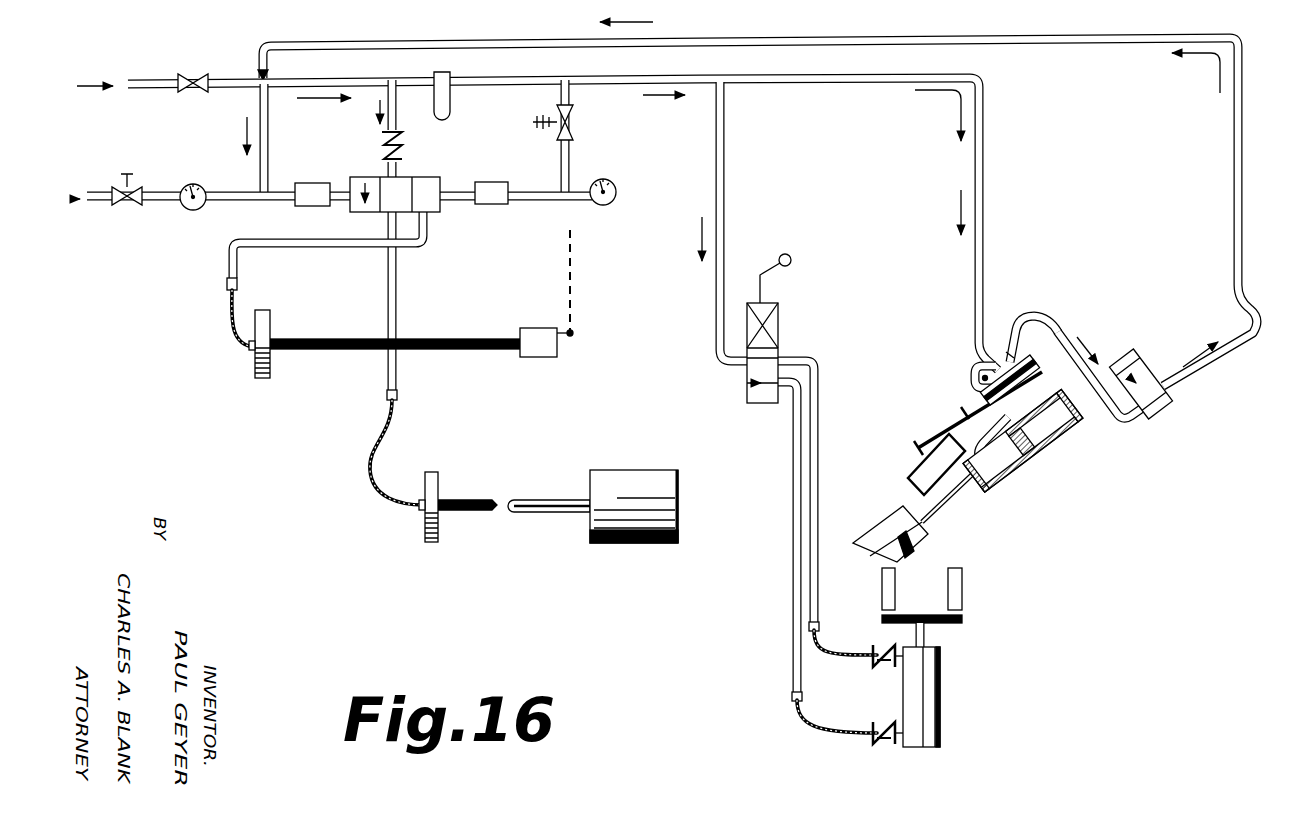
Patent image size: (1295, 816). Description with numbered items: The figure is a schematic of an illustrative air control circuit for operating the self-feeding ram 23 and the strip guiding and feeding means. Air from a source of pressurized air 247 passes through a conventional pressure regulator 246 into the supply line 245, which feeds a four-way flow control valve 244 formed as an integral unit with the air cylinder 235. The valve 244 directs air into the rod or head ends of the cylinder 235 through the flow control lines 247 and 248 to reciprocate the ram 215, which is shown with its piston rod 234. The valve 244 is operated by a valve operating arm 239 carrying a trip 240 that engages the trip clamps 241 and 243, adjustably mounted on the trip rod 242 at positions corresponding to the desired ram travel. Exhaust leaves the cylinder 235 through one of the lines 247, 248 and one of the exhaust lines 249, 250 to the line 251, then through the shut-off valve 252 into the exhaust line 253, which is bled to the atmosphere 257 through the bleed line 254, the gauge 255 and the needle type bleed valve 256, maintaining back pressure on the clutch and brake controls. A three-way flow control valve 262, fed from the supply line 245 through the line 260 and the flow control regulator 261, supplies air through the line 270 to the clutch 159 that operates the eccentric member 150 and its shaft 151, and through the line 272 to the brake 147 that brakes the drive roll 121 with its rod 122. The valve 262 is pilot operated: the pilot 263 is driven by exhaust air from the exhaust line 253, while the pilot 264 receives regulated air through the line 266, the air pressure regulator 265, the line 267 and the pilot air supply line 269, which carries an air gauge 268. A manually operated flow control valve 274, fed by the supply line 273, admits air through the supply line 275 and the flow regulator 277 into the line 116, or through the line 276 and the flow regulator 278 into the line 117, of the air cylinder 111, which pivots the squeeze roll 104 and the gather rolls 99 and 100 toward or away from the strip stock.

The self-feeding ram 23 is at (866, 566).
The gather roll 99 is at (962, 586).
The gather roll 100 is at (882, 586).
The squeeze roll 104 is at (964, 618).
The air cylinder 111 is at (942, 700).
The conduit 116 is at (896, 664).
The conduit 117 is at (893, 746).
The drive roll 121 is at (632, 470).
The rod 122 is at (537, 497).
The brake 147 is at (442, 490).
The eccentric member 150 is at (545, 360).
The shaft 151 is at (470, 338).
The clutch 159 is at (252, 365).
The ram 215 is at (930, 542).
The piston rod 234 is at (960, 492).
The air cylinder 235 is at (1052, 452).
The valve operating arm 239 is at (936, 464).
The trip 240 is at (937, 440).
The trip clamp 241 is at (915, 452).
The trip rod 242 is at (962, 410).
The trip clamp 243 is at (980, 376).
The four-way flow control valve 244 is at (1042, 340).
The supply line 245 is at (618, 78).
The pressure regulator 246 is at (196, 74).
The source of pressurized air 247 is at (92, 82).
The flow control line 248 is at (1025, 380).
The exhaust line 249 is at (980, 370).
The exhaust line 250 is at (1010, 350).
The line 251 is at (1064, 337).
The shut-off valve 252 is at (1132, 356).
The exhaust line 253 is at (1236, 165).
The bleed line 254 is at (233, 200).
The gauge 255 is at (198, 184).
The needle type bleed valve 256 is at (134, 186).
The atmosphere 257 is at (88, 204).
The line 260 is at (397, 100).
The flow control regulator 261 is at (406, 151).
The three-way flow control valve 262 is at (435, 180).
The pilot means 263 is at (308, 183).
The pilot means 264 is at (490, 204).
The air pressure regulator 265 is at (575, 129).
The line 266 is at (557, 104).
The line 267 is at (570, 162).
The air gauge 268 is at (617, 192).
The pilot air supply line 269 is at (552, 203).
The line 270 is at (428, 228).
The line 272 is at (397, 290).
The supply line 273 is at (724, 182).
The flow control valve 274 is at (782, 320).
The supply line 275 is at (819, 424).
The line 276 is at (792, 449).
The flow regulator 277 is at (886, 645).
The flow regulator 278 is at (874, 746).